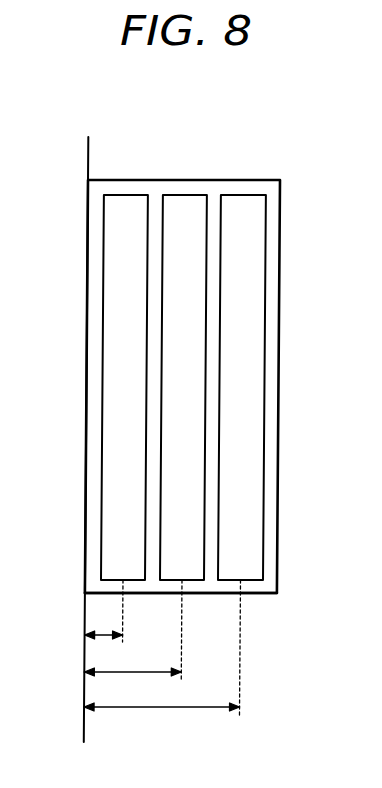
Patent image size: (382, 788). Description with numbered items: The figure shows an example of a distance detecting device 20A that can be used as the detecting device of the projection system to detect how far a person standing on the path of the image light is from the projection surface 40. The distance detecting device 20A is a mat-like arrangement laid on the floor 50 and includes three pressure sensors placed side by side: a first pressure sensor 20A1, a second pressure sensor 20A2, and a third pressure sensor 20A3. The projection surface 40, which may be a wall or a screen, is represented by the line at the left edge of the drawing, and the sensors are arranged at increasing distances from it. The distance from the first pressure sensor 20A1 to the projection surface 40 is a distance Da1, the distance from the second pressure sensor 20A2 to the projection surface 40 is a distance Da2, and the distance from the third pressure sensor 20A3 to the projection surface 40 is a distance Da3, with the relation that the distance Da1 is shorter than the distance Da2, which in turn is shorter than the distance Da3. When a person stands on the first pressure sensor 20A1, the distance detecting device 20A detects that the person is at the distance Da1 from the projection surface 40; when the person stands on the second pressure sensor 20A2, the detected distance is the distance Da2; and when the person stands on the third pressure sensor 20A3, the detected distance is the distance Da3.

The distance detecting device 20A is at (278, 180).
The first pressure sensor 20A1 is at (123, 195).
The second pressure sensor 20A2 is at (188, 195).
The third pressure sensor 20A3 is at (244, 195).
The projection surface 40 is at (88, 727).
The floor 50 is at (263, 613).
The distance Da1 is at (105, 632).
The distance Da2 is at (133, 629).
The distance Da3 is at (162, 647).